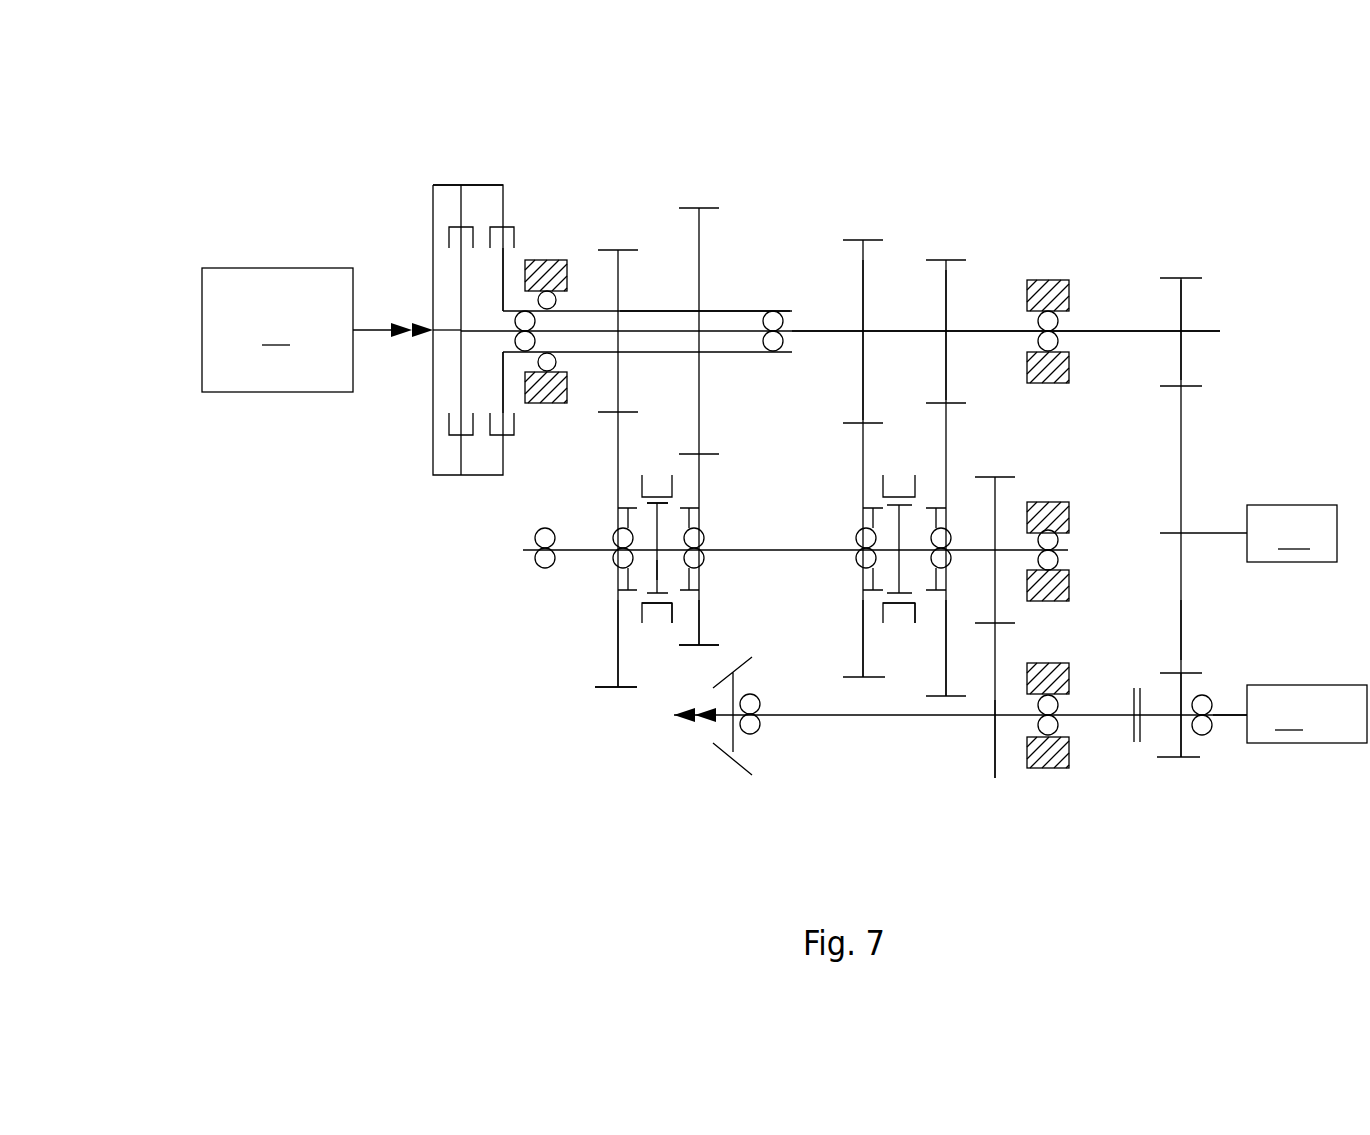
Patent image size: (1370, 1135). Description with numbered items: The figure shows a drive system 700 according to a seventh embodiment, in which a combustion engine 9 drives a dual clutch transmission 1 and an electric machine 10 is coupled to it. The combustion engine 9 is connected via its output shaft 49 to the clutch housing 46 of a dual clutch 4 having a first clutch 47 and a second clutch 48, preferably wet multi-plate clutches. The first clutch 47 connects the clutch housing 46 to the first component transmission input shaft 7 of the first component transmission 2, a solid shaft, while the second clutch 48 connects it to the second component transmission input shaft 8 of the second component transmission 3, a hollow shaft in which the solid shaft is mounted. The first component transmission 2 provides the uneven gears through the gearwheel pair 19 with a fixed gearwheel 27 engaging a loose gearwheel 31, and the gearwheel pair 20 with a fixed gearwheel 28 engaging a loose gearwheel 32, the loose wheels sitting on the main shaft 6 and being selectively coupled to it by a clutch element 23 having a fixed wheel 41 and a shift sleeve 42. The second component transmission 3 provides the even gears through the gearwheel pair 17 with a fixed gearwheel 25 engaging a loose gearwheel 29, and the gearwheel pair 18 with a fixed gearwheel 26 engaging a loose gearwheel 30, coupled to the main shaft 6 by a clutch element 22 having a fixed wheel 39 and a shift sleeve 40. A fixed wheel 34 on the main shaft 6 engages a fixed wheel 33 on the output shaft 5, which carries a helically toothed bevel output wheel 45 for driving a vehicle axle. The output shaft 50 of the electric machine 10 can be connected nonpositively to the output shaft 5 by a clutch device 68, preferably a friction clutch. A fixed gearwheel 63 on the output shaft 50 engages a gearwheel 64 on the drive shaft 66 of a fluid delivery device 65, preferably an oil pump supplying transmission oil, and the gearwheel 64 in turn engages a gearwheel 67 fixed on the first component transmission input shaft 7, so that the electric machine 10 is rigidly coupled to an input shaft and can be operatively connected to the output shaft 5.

The drive system 700 is at (326, 160).
The combustion engine 9 is at (277, 330).
The output shaft 49 is at (372, 330).
The dual clutch 4 is at (435, 478).
The clutch housing 46 is at (449, 185).
The first clutch 47 is at (461, 453).
The second clutch 48 is at (503, 453).
The dual clutch transmission 1 is at (778, 200).
The second component transmission 3 is at (655, 305).
The second component transmission input shaft 8 is at (686, 311).
The gearwheel pair 17 is at (614, 243).
The gearwheel 25 is at (618, 282).
The gearwheel pair 18 is at (699, 198).
The gearwheel 26 is at (699, 280).
The gearwheel pair 19 is at (861, 235).
The gearwheel 27 is at (864, 290).
The gearwheel pair 20 is at (945, 253).
The gearwheel 28 is at (946, 290).
The first component transmission 2 is at (1000, 313).
The first component transmission input shaft 7 is at (1087, 331).
The gearwheel 67 is at (1181, 300).
The main shaft 6 is at (579, 549).
The clutch element 22 is at (652, 620).
The fixed wheel 39 is at (658, 568).
The gearwheel 29 is at (617, 629).
The shift sleeve 40 is at (672, 615).
The gearwheel 30 is at (692, 645).
The output wheel 45 is at (723, 747).
The output shaft 5 is at (782, 714).
The gearwheel 31 is at (863, 619).
The fixed wheel 41 is at (899, 525).
The clutch element 23 is at (893, 622).
The shift sleeve 42 is at (914, 612).
The gearwheel 32 is at (946, 652).
The fixed wheel 34 is at (995, 503).
The fixed wheel 33 is at (995, 778).
The clutch device 68 is at (1133, 728).
The drive shaft 66 is at (1201, 533).
The fluid delivery device 65 is at (1292, 533).
The gearwheel 64 is at (1181, 627).
The gearwheel 63 is at (1181, 688).
The electric machine 10 is at (1307, 714).
The output shaft 50 is at (1223, 716).